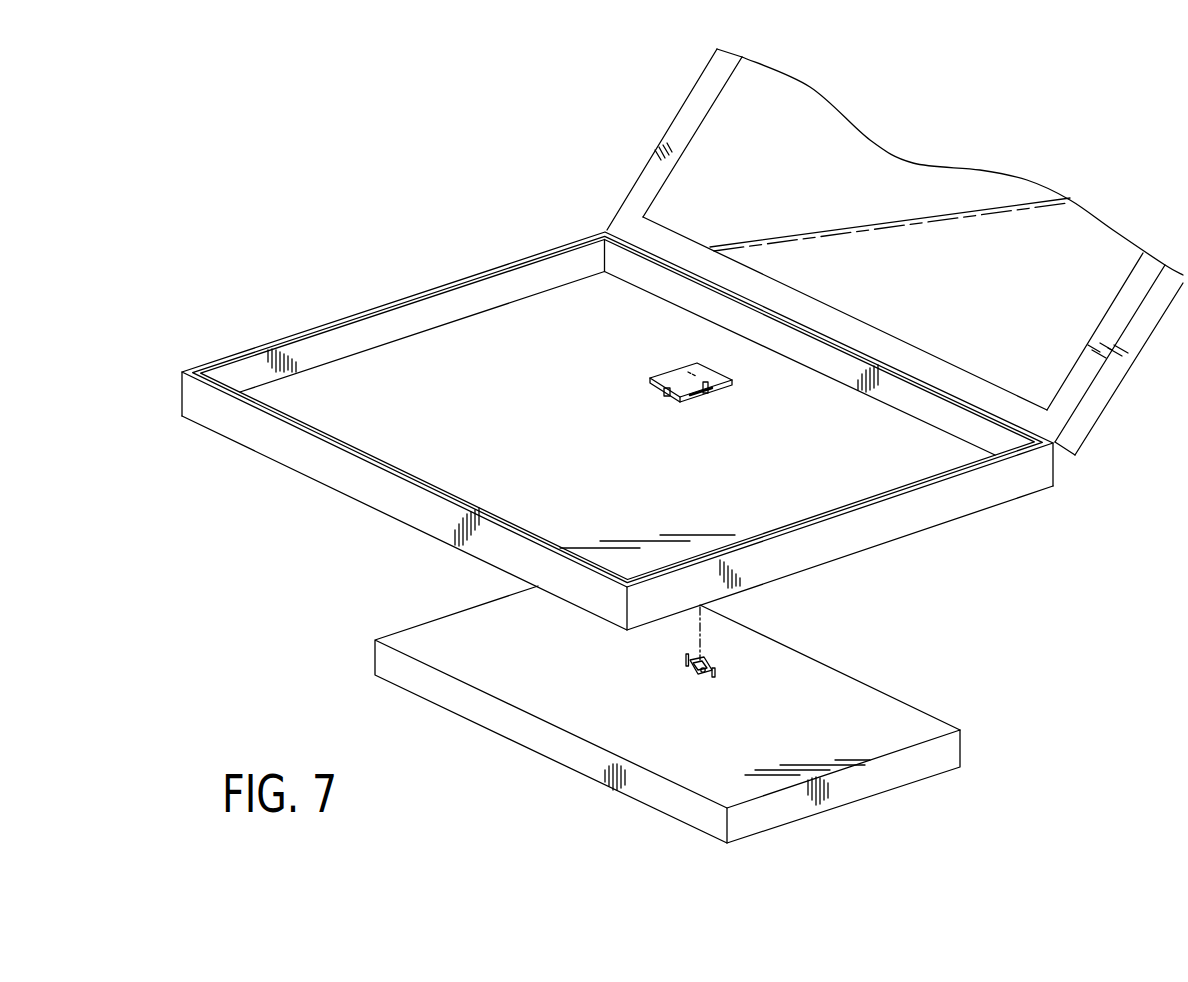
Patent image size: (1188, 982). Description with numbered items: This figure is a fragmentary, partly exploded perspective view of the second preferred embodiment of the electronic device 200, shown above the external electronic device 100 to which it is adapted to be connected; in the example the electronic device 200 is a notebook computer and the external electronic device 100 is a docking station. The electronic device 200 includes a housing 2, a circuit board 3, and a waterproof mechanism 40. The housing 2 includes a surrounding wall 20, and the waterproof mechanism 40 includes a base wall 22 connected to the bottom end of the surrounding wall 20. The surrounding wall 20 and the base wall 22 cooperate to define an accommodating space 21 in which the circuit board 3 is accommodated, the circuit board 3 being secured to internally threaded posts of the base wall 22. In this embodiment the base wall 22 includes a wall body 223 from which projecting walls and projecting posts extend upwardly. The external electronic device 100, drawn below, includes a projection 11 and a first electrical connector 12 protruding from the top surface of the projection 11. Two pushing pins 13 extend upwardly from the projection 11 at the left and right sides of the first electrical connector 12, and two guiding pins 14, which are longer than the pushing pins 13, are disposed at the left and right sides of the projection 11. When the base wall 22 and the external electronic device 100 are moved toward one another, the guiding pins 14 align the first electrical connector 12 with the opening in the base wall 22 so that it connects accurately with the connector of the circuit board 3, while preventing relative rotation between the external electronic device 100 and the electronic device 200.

The electronic device 200 is at (682, 339).
The housing 2 is at (617, 411).
The surrounding wall 20 is at (432, 308).
The accommodating space 21 is at (398, 378).
The base wall 22 is at (493, 333).
The wall body 223 is at (585, 347).
The circuit board 3 is at (683, 377).
The waterproof mechanism 40 is at (710, 400).
The external electronic device 100 is at (770, 687).
The projection 11 is at (693, 670).
The first electrical connector 12 is at (700, 673).
The pushing pins 13 is at (688, 664).
The guiding pins 14 is at (713, 673).